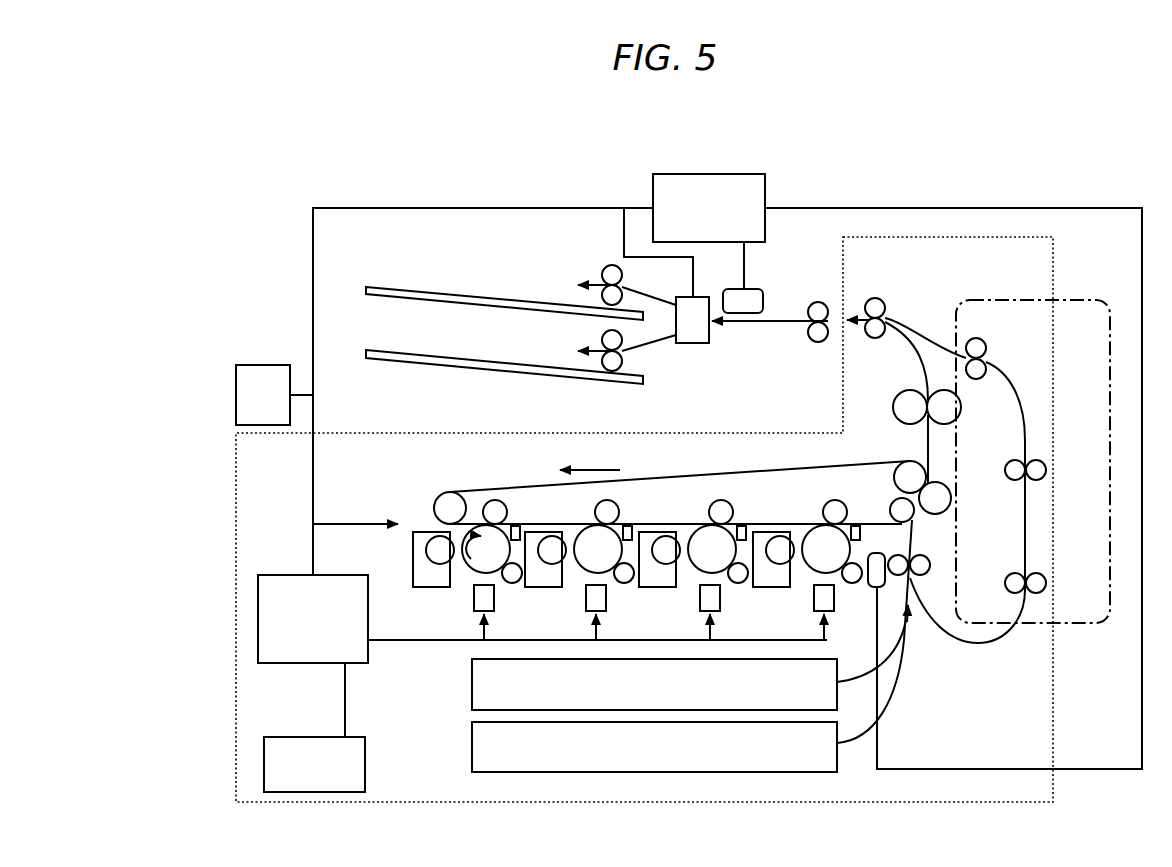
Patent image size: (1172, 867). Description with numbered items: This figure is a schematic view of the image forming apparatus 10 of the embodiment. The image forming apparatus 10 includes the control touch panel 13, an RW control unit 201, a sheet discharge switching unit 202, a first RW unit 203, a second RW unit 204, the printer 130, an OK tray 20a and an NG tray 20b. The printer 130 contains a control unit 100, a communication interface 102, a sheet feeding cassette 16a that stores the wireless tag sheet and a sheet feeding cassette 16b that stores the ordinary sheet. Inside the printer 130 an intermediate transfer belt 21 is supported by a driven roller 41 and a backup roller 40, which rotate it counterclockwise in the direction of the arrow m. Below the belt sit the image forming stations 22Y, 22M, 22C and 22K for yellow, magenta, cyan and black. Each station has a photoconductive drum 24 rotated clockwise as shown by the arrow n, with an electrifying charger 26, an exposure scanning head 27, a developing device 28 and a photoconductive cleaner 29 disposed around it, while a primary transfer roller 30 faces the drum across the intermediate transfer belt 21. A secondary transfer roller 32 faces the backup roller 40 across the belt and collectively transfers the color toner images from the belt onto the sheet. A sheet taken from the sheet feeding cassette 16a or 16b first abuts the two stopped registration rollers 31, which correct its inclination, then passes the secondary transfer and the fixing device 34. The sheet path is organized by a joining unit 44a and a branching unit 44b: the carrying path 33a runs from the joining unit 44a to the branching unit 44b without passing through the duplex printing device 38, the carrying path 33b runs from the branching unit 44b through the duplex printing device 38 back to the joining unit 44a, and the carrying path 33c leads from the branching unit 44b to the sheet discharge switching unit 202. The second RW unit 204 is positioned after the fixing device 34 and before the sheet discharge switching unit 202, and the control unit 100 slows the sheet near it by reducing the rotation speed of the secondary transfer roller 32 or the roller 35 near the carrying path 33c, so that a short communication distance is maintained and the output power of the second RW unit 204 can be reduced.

The image forming apparatus 10 is at (342, 166).
The control touch panel 13 is at (236, 395).
The sheet feeding cassette 16a is at (472, 679).
The sheet feeding cassette 16b is at (472, 743).
The OK tray 20a is at (368, 286).
The NG tray 20b is at (368, 350).
The intermediate transfer belt 21 is at (733, 473).
The image forming station 22Y is at (460, 545).
The image forming station 22M is at (611, 587).
The image forming station 22C is at (727, 587).
The image forming station 22K is at (808, 587).
The photoconductive drum 24 is at (462, 540).
The electrifying charger 26 is at (517, 581).
The exposure scanning head 27 is at (472, 599).
The developing device 28 is at (411, 561).
The photoconductive cleaner 29 is at (515, 526).
The primary transfer roller 30 is at (494, 500).
The registration roller 31 is at (912, 585).
The secondary transfer roller 32 is at (928, 514).
The carrying path 33a is at (928, 442).
The carrying path 33b is at (940, 348).
The carrying path 33c is at (838, 316).
The fixing device 34 is at (921, 395).
The roller 35 is at (806, 325).
The duplex printing device 38 is at (1082, 300).
The backup roller 40 is at (894, 481).
The driven roller 41 is at (443, 496).
The joining unit 44a is at (912, 586).
The branching unit 44b is at (912, 330).
The control unit 100 is at (312, 663).
The communication interface 102 is at (312, 793).
The printer 130 is at (236, 704).
The RW control unit 201 is at (653, 189).
The sheet discharge switching unit 202 is at (694, 333).
The first RW unit 203 is at (873, 590).
The second RW unit 204 is at (760, 300).
The arrow m is at (588, 469).
The arrow n is at (470, 556).